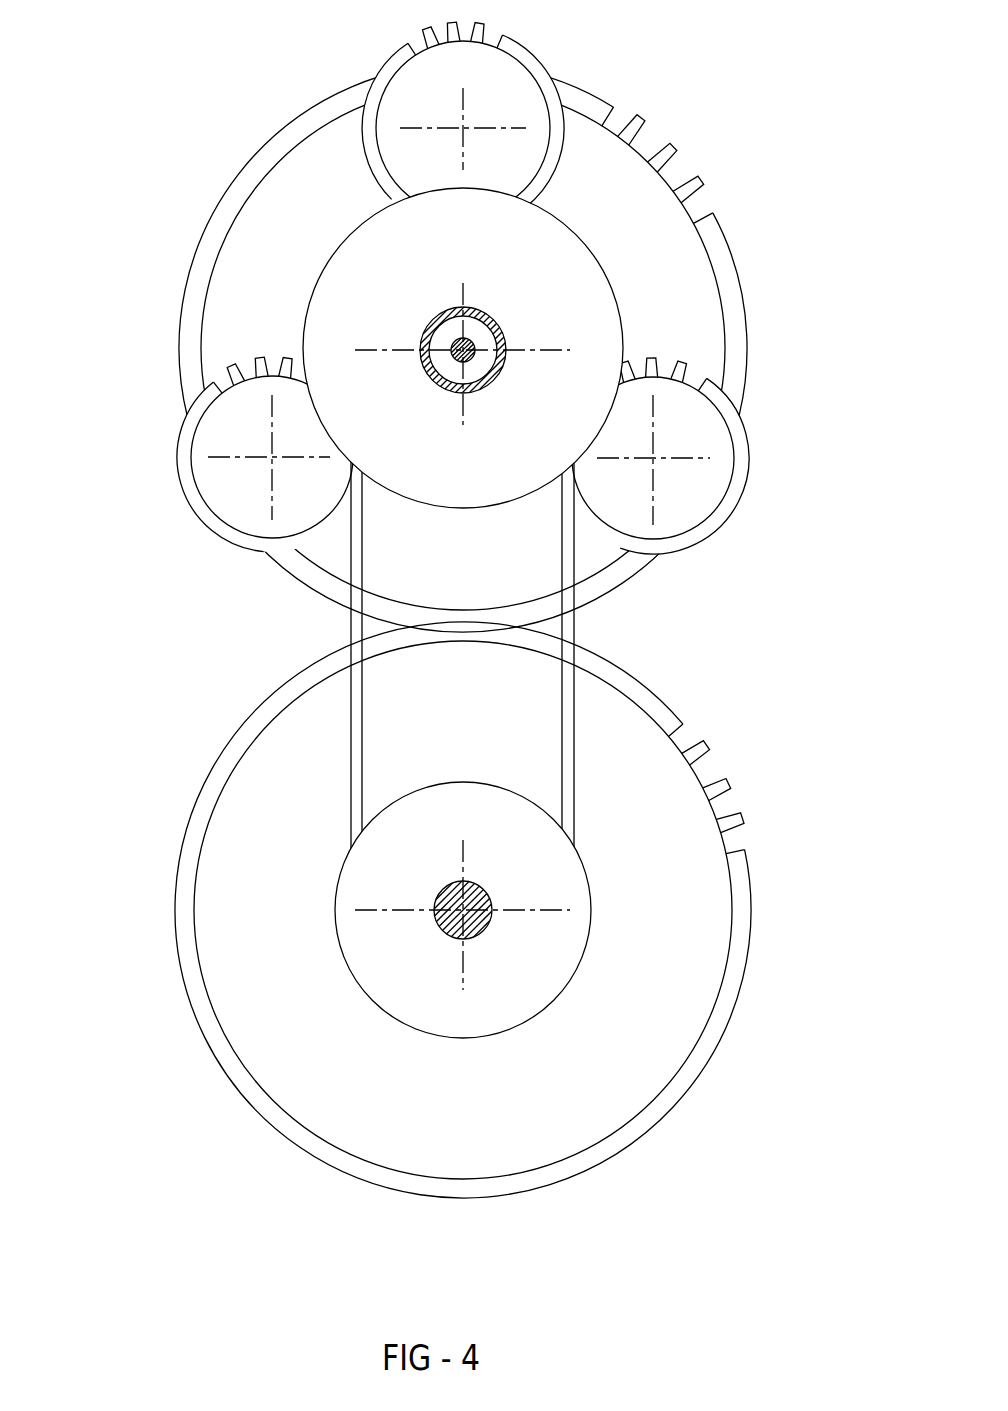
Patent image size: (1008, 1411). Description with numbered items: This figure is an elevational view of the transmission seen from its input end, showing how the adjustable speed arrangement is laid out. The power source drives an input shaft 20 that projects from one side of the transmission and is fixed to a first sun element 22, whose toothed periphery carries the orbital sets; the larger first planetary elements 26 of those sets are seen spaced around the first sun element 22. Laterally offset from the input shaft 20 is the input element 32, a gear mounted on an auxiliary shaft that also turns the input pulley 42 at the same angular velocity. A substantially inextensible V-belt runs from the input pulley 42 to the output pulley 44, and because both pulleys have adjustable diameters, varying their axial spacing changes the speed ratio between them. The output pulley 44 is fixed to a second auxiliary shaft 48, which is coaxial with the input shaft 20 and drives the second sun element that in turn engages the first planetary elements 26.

The input shaft 20 is at (450, 350).
The first sun element 22 is at (690, 275).
The first planetary elements 26 is at (503, 88).
The input element 32 is at (268, 999).
The input pulley 42 is at (357, 900).
The output pulley 44 is at (560, 258).
The second auxiliary shaft 48 is at (437, 305).